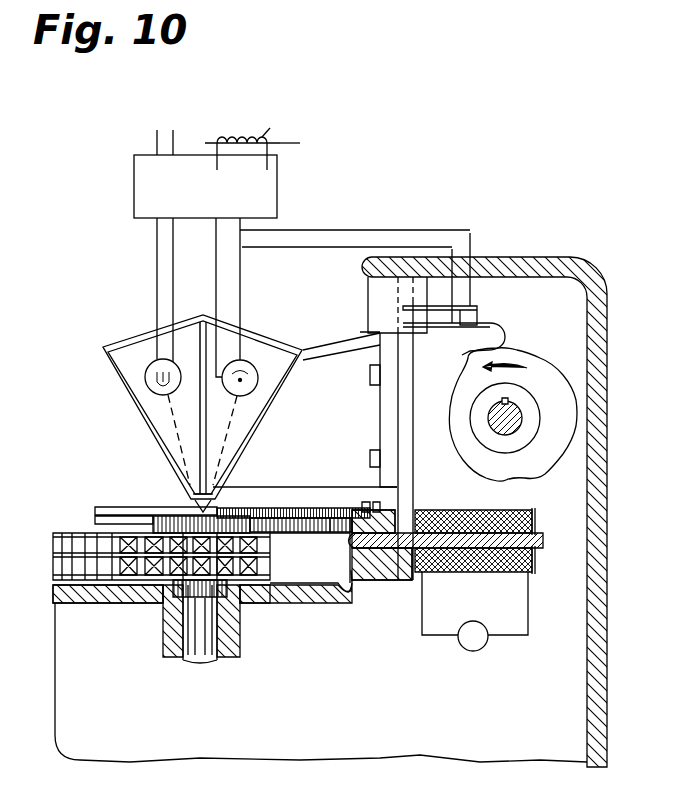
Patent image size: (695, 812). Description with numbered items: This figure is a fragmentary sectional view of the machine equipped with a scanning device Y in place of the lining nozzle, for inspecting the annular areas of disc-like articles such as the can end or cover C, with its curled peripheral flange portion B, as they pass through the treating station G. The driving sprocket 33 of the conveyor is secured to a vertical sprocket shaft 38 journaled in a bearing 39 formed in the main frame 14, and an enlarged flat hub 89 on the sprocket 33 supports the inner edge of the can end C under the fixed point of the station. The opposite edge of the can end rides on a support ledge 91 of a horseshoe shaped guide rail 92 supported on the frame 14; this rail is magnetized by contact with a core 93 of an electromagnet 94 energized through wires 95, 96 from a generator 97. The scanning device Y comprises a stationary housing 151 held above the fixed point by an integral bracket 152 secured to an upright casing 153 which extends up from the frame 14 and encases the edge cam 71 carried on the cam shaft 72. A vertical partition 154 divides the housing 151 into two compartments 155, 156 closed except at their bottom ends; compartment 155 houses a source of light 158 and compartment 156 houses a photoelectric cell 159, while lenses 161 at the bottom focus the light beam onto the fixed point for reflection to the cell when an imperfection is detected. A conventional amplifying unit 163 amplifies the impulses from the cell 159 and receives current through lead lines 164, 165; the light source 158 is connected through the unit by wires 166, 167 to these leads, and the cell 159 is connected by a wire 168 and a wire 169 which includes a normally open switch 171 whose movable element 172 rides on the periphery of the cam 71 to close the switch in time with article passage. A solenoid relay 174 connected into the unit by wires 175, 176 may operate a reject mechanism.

The frame 14 is at (118, 590).
The driving sprocket 33 is at (268, 568).
The sprocket shaft 38 is at (204, 662).
The bearing 39 is at (232, 640).
The edge cam 71 is at (545, 472).
The cam shaft 72 is at (497, 418).
The hub 89 is at (140, 510).
The support ledge 91 is at (352, 553).
The guide rail 92 is at (392, 511).
The core 93 is at (538, 538).
The electromagnet 94 is at (536, 566).
The wire 95 is at (422, 612).
The wire 96 is at (530, 612).
The generator 97 is at (484, 648).
The housing 151 is at (128, 330).
The bracket 152 is at (340, 345).
The casing 153 is at (607, 387).
The partition 154 is at (200, 410).
The compartment 155 is at (175, 443).
The compartment 156 is at (240, 425).
The source of light 158 is at (145, 379).
The photoelectric cell 159 is at (260, 384).
The lenses 161 is at (195, 502).
The amplifying unit 163 is at (134, 178).
The lead line 164 is at (157, 137).
The lead line 165 is at (173, 138).
The wire 166 is at (157, 256).
The wire 167 is at (173, 268).
The wire 168 is at (216, 285).
The wire 169 is at (320, 248).
The electric switch 171 is at (478, 313).
The movable element 172 is at (506, 338).
The solenoid relay 174 is at (283, 121).
The wire 175 is at (212, 146).
The wire 176 is at (282, 144).
The scanning device Y is at (171, 392).
The treating station G is at (112, 505).
The curled peripheral flange portion B is at (212, 508).
The cover C is at (288, 518).